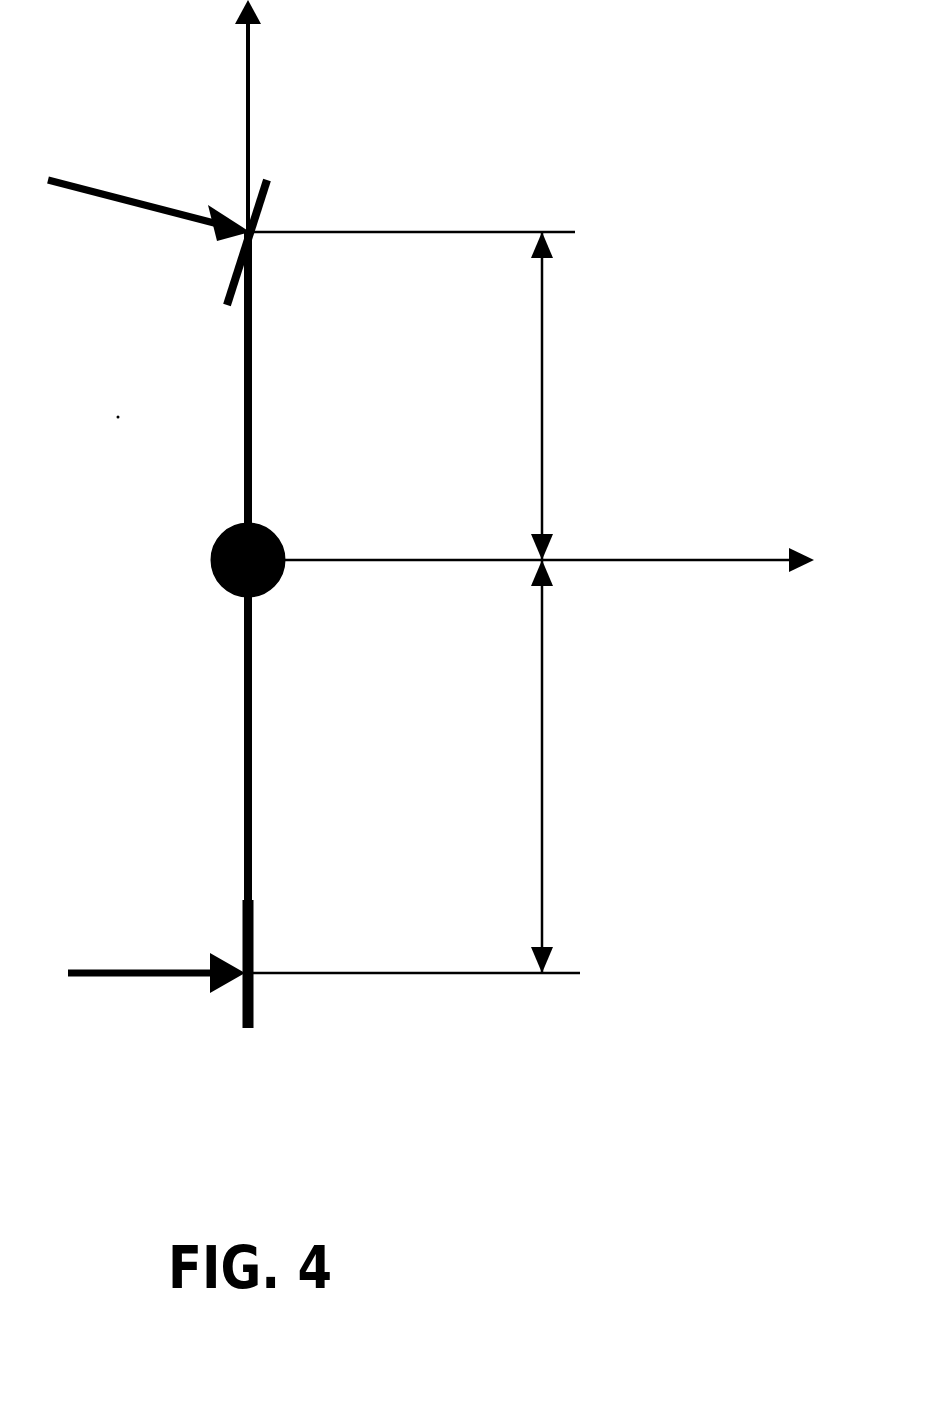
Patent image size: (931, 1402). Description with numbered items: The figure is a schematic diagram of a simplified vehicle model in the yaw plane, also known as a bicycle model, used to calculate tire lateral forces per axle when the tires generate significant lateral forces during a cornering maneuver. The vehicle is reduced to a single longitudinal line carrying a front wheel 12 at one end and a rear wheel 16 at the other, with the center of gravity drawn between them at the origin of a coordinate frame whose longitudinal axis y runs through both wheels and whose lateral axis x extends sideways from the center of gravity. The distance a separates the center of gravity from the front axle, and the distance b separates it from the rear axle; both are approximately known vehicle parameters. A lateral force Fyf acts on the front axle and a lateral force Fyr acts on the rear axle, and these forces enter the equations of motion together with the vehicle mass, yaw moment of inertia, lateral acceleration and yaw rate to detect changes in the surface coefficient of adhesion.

The front wheel 12 is at (210, 278).
The rear wheel 16 is at (223, 1027).
The distance between the vehicle's center of gravity and the front axle a is at (562, 396).
The distance between the vehicle's center of gravity and the rear axle b is at (561, 766).
The lateral force for the front axle Fyf is at (149, 171).
The lateral force for the rear axle Fyr is at (156, 937).
The x axis x is at (537, 600).
The y axis y is at (284, 116).